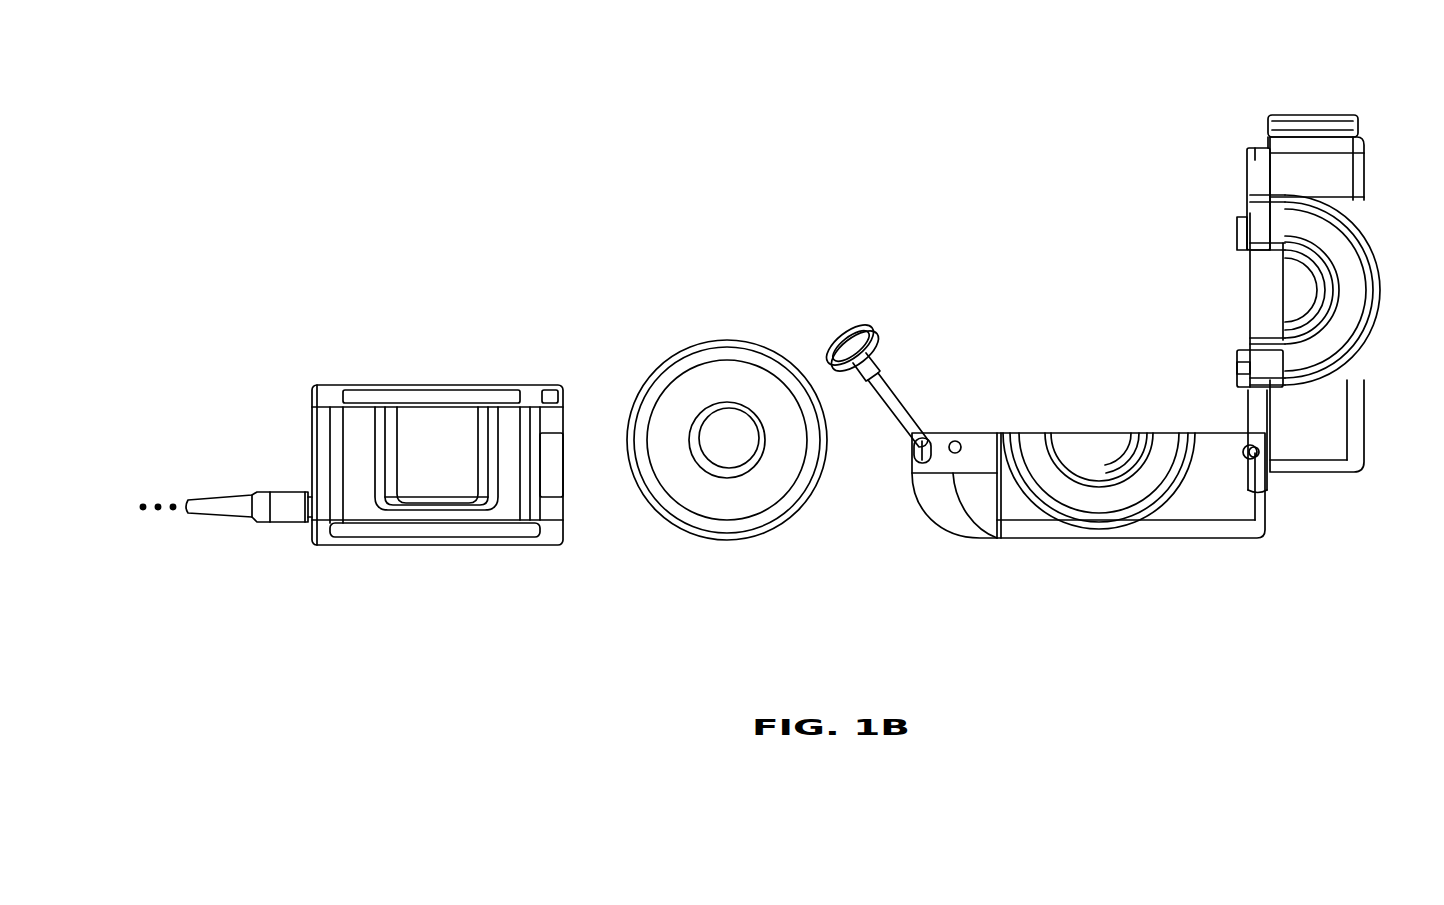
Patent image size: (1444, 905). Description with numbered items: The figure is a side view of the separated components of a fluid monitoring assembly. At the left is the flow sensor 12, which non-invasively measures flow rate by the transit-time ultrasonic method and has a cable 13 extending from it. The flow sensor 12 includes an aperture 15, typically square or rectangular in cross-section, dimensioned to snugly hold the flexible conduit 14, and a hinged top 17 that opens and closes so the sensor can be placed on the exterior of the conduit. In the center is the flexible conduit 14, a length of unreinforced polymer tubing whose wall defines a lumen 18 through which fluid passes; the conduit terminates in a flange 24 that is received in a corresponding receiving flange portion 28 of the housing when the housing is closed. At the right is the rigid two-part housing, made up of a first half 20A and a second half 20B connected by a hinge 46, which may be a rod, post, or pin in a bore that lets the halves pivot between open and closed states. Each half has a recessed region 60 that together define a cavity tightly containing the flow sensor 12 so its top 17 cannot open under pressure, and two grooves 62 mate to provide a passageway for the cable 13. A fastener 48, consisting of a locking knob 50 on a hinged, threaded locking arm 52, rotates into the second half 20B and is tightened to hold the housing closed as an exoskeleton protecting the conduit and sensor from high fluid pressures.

The flow sensor 12 is at (351, 466).
The cable 13 is at (230, 495).
The flexible conduit 14 is at (719, 395).
The aperture 15 is at (433, 477).
The top 17 is at (442, 390).
The lumen 18 is at (727, 440).
The first half 20A is at (1207, 493).
The second half 20B is at (1288, 284).
The flange 24 is at (740, 340).
The receiving flange portion 28 is at (1108, 513).
The hinge 46 is at (1248, 462).
The fastener 48 is at (884, 357).
The locking knob 50 is at (835, 370).
The locking arm 52 is at (908, 395).
The recessed region 60 is at (1250, 200).
The groove 62 is at (1330, 120).